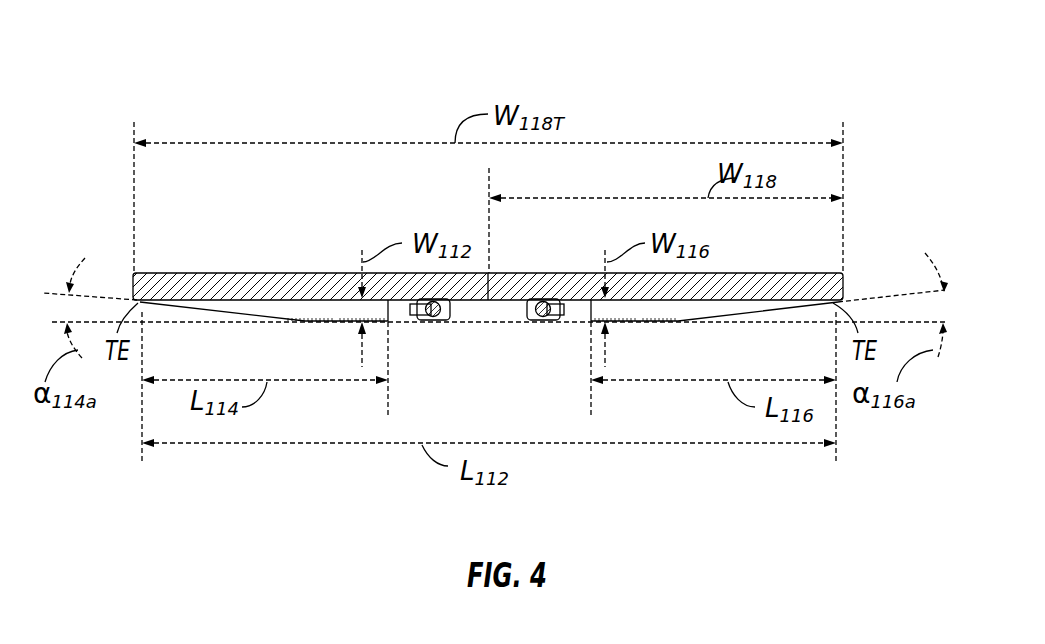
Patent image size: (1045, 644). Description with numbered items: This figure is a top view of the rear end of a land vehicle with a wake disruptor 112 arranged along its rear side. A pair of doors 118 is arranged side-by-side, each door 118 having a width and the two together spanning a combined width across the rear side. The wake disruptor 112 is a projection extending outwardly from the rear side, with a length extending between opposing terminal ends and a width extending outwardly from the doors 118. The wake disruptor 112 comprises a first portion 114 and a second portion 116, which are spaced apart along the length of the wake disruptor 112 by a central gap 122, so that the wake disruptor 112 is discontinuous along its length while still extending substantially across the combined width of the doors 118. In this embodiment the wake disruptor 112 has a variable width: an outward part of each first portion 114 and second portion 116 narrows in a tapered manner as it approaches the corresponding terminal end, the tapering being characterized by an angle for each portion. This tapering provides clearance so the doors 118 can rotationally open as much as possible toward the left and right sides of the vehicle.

The wake disruptor 112 is at (662, 498).
The first portion 114 is at (335, 311).
The second portion 116 is at (639, 311).
The door 118 is at (197, 273).
The gap 122 is at (492, 312).